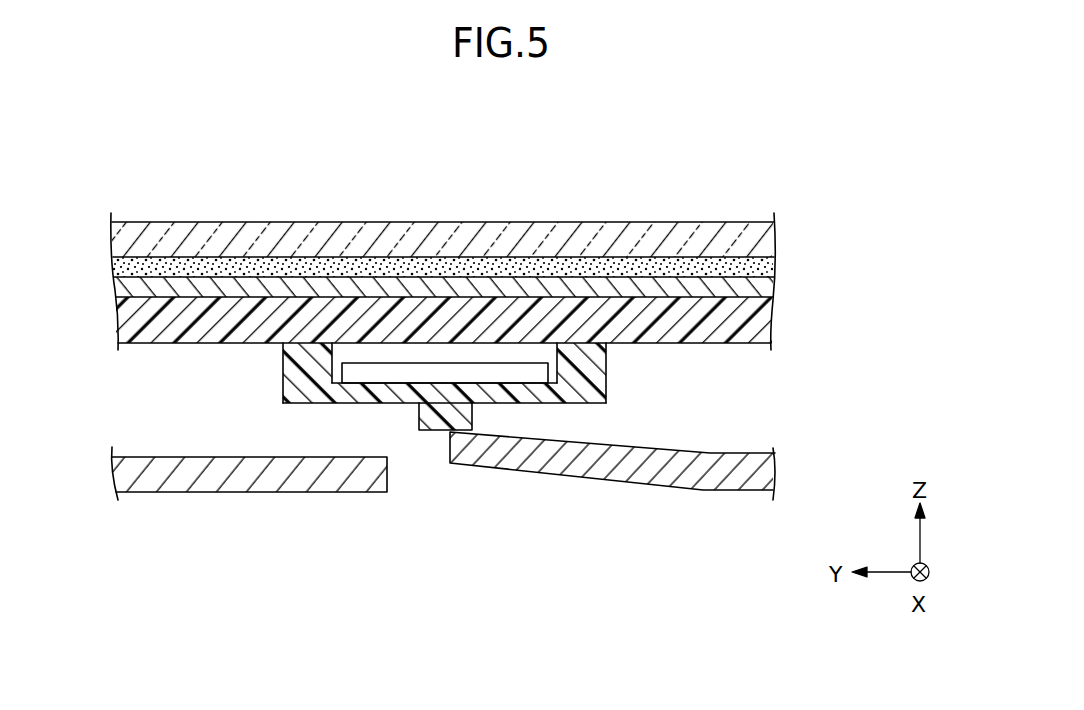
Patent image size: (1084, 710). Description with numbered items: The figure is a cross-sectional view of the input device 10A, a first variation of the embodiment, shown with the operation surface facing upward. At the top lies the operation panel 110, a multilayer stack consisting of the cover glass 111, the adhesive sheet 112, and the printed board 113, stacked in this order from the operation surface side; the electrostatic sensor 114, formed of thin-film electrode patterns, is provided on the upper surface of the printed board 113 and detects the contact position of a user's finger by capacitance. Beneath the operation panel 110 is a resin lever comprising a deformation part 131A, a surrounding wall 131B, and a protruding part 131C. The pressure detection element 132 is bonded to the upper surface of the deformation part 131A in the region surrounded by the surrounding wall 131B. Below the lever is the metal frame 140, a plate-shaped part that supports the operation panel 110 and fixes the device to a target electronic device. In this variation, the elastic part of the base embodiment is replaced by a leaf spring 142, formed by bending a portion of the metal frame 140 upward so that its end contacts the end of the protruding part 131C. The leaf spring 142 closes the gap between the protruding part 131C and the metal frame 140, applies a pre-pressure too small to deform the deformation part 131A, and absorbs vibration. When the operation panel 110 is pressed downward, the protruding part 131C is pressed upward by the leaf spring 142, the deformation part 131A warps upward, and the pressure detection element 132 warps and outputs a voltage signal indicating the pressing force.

The input device 10A is at (747, 178).
The operation panel 110 is at (520, 281).
The cover glass 111 is at (772, 238).
The adhesive sheet 112 is at (772, 268).
The electrostatic sensor 114 is at (772, 287).
The printed board 113 is at (488, 320).
The deformation part 131A is at (362, 393).
The surrounding wall 131B is at (293, 380).
The protruding part 131C is at (440, 431).
The pressure detection element 132 is at (437, 375).
The metal frame 140 is at (486, 491).
The leaf spring 142 is at (563, 468).